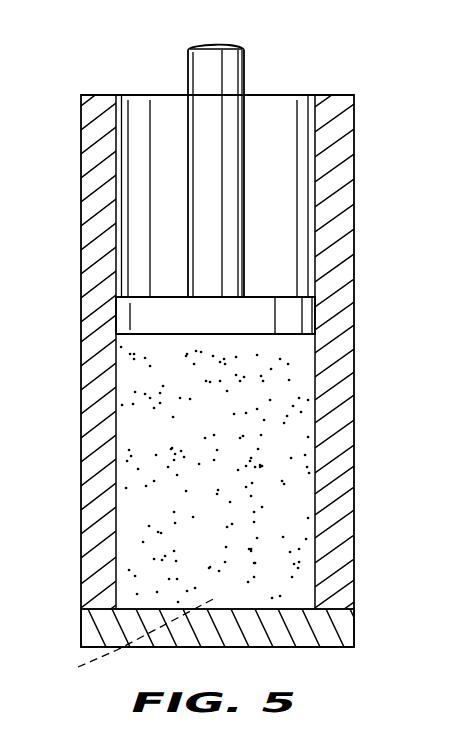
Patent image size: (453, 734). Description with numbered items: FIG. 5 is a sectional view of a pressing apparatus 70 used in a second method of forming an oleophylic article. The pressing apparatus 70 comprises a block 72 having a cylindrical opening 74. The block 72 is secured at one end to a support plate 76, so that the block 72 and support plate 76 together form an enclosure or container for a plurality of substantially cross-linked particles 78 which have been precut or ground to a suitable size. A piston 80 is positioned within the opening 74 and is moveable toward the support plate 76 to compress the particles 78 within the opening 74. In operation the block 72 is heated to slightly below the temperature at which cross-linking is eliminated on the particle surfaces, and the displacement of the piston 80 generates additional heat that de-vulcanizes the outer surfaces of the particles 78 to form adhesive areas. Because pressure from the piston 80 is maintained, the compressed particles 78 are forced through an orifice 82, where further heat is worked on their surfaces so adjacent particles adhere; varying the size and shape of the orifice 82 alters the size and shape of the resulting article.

The pressing apparatus 70 is at (80, 97).
The block 72 is at (355, 418).
The cylindrical opening 74 is at (272, 95).
The support plate 76 is at (355, 630).
The substantially cross-linked particles 78 is at (135, 365).
The piston 80 is at (260, 285).
The orifice 82 is at (131, 639).